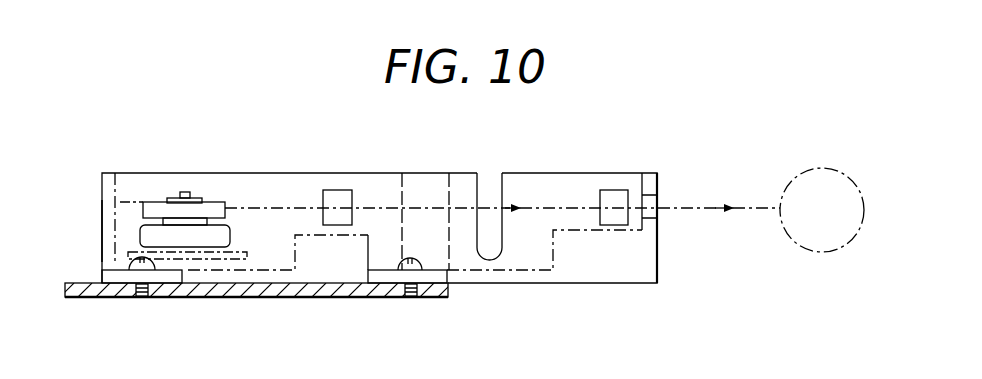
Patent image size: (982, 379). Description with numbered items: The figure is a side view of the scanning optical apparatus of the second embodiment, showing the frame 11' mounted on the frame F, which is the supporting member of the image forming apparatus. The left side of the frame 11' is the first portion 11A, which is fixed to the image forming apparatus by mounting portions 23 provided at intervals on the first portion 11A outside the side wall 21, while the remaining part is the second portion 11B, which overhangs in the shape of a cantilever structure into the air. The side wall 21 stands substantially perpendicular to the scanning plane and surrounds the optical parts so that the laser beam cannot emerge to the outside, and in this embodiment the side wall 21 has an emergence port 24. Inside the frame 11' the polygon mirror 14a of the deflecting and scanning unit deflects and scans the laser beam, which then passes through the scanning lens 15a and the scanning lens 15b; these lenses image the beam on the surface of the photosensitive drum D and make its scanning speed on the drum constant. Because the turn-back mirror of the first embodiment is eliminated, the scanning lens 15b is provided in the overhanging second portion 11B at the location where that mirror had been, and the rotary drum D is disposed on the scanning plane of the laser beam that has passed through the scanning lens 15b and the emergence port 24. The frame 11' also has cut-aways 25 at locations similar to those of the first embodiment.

The frame 11' is at (356, 216).
The first portion 11A is at (230, 172).
The second portion 11B is at (573, 172).
The polygon mirror 14a is at (158, 200).
The scanning lens 15a is at (338, 190).
The scanning lens 15b is at (618, 190).
The side wall 21 is at (101, 240).
The mounting portions 23 is at (133, 297).
The emergence port 24 is at (653, 203).
The cut-aways 25 is at (490, 188).
The photosensitive drum D is at (823, 168).
The frame F is at (95, 292).